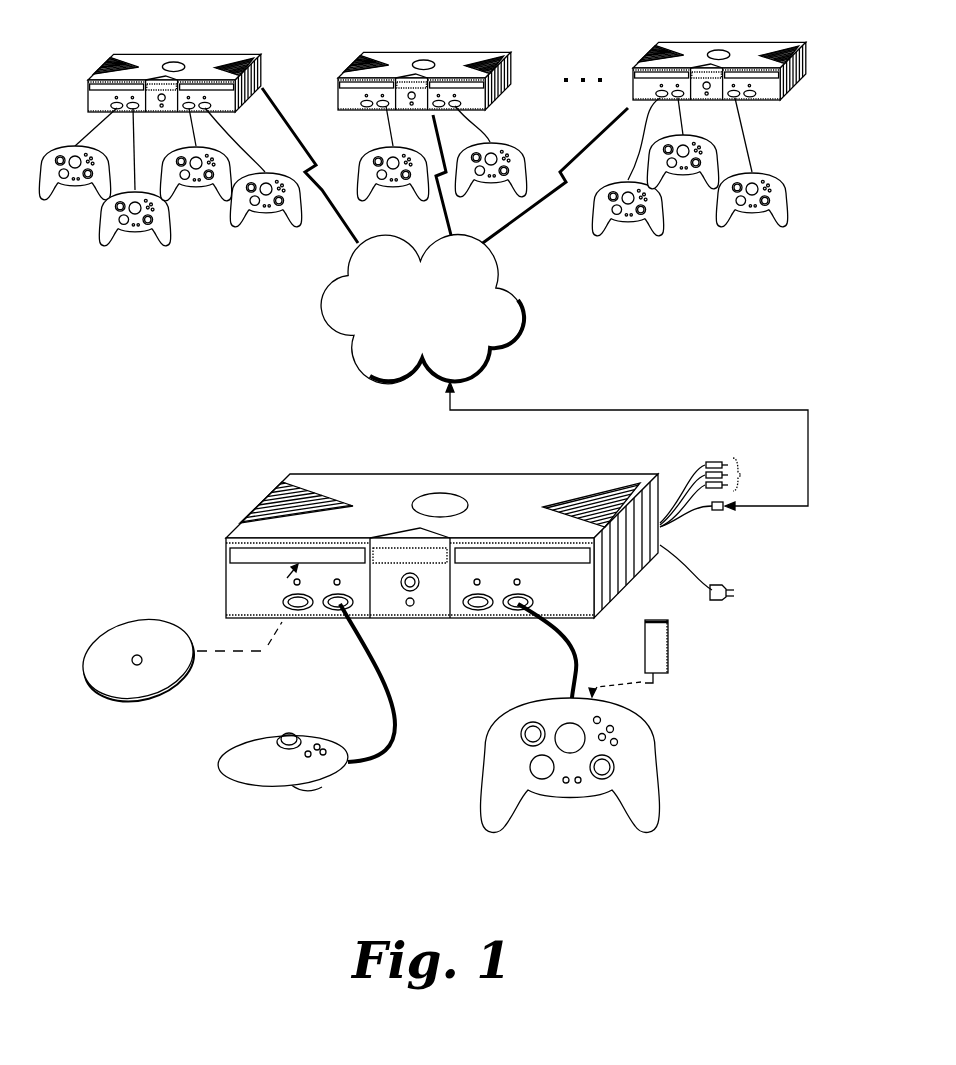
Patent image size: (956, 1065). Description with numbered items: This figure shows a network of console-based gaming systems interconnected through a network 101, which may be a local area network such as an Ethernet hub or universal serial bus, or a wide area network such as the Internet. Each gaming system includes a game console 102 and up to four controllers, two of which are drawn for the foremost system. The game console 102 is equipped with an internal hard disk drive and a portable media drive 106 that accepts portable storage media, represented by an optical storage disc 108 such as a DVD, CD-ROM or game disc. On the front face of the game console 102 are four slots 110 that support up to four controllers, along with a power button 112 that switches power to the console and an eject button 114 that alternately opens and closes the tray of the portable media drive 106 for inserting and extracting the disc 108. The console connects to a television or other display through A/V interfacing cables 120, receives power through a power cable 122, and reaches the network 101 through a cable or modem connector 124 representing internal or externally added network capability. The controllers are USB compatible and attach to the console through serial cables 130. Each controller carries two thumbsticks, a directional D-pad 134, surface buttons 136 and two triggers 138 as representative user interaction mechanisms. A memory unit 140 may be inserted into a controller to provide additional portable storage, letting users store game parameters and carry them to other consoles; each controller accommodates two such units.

The network 101 is at (325, 304).
The game console 102 is at (320, 472).
The portable media drive 106 is at (238, 553).
The optical storage disc 108 is at (145, 698).
The slots 110 is at (338, 609).
The power button 112 is at (409, 607).
The eject button 114 is at (408, 574).
The A/V interfacing cables 120 is at (708, 462).
The power cable 122 is at (716, 596).
The cable or modem connector 124 is at (692, 522).
The serial cables 130 is at (399, 690).
The D-pad 134 is at (530, 767).
The surface buttons 136 is at (612, 727).
The triggers 138 is at (326, 789).
The memory unit 140 is at (671, 646).